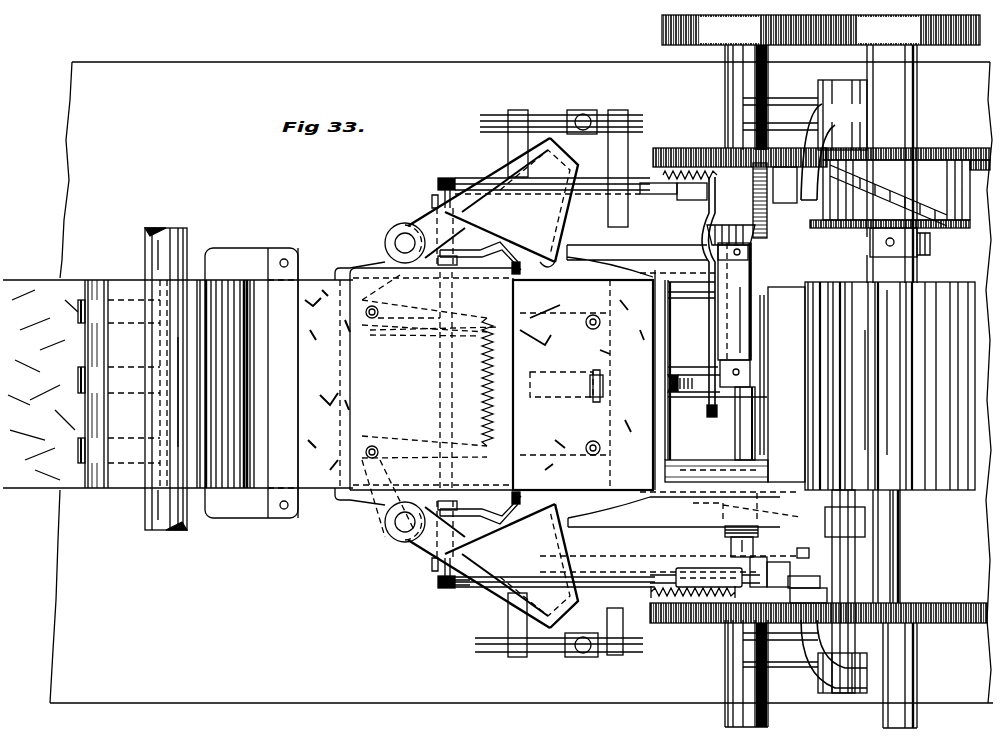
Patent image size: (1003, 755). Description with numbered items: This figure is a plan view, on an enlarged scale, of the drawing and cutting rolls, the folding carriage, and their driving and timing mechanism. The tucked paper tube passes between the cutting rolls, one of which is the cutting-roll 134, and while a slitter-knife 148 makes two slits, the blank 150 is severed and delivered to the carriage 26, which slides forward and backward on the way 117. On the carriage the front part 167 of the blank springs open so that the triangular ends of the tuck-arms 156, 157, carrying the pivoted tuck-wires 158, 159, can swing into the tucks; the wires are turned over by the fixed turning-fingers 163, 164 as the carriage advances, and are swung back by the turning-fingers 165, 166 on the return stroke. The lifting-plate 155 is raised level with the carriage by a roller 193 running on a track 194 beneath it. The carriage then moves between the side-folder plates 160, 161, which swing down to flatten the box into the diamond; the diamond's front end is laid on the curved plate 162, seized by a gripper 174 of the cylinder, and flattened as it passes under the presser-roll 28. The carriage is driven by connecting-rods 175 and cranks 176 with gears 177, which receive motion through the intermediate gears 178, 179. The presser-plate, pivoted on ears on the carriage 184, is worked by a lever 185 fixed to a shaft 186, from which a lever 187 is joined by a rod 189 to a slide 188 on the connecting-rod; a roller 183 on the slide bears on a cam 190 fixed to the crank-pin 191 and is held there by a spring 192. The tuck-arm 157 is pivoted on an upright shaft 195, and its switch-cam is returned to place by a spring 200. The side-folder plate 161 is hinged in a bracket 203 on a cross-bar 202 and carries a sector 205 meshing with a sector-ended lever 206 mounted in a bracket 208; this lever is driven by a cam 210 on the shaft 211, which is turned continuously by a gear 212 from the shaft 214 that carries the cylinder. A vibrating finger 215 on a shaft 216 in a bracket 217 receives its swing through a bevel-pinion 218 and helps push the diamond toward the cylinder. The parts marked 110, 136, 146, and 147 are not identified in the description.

The carriage 26 is at (377, 508).
The presser-roll 28 is at (890, 386).
The cross bar 110 is at (720, 476).
The way 117 is at (677, 380).
The cutting-roll 134 is at (178, 384).
The shaft 136 is at (150, 510).
The stud 146 is at (424, 305).
The link 147 is at (380, 316).
The slitter-knife 148 is at (435, 320).
The blank 150 is at (277, 383).
The lifting-plate 155 is at (610, 415).
The tuck-arm 156 is at (500, 529).
The tuck-arm 157 is at (500, 237).
The tuck-wire 158 is at (565, 543).
The tuck-wire 159 is at (562, 231).
The side-folder plate 160 is at (684, 510).
The side-folder plate 161 is at (637, 260).
The curved plate 162 is at (782, 384).
The turning-finger 163 is at (612, 652).
The turning-finger 164 is at (614, 143).
The turning-finger 165 is at (508, 614).
The turning-finger 166 is at (508, 140).
The front part of the blank 167 is at (583, 385).
The gripper 174 is at (821, 30).
The connecting-rod 175 is at (621, 382).
The crank 176 is at (808, 596).
The gear 177 is at (967, 152).
The intermediate gear 178 is at (818, 404).
The intermediate gear 179 is at (761, 386).
The roller 183 is at (760, 580).
The ears on the carriage 184 is at (552, 494).
The lever 185 is at (480, 518).
The shaft 186 is at (443, 403).
The lever 187 is at (436, 577).
The slide 188 is at (660, 580).
The rod 189 is at (462, 590).
The cam 190 is at (804, 582).
The crank-pin 191 is at (803, 545).
The spring 192 is at (712, 618).
The roller 193 is at (605, 380).
The track 194 is at (561, 384).
The upright shaft 195 is at (395, 233).
The spring 200 is at (474, 382).
The cross-bar 202 is at (843, 591).
The bracket 203 is at (877, 382).
The sector 205 is at (724, 541).
The sector-ended lever 206 is at (754, 211).
The bracket 208 is at (834, 140).
The cam 210 is at (890, 194).
The shaft 211 is at (892, 510).
The gear 212 is at (889, 372).
The shaft 214 is at (692, 185).
The vibrating finger 215 is at (700, 385).
The shaft 216 is at (730, 395).
The bracket 217 is at (717, 320).
The bevel-pinion 218 is at (703, 236).